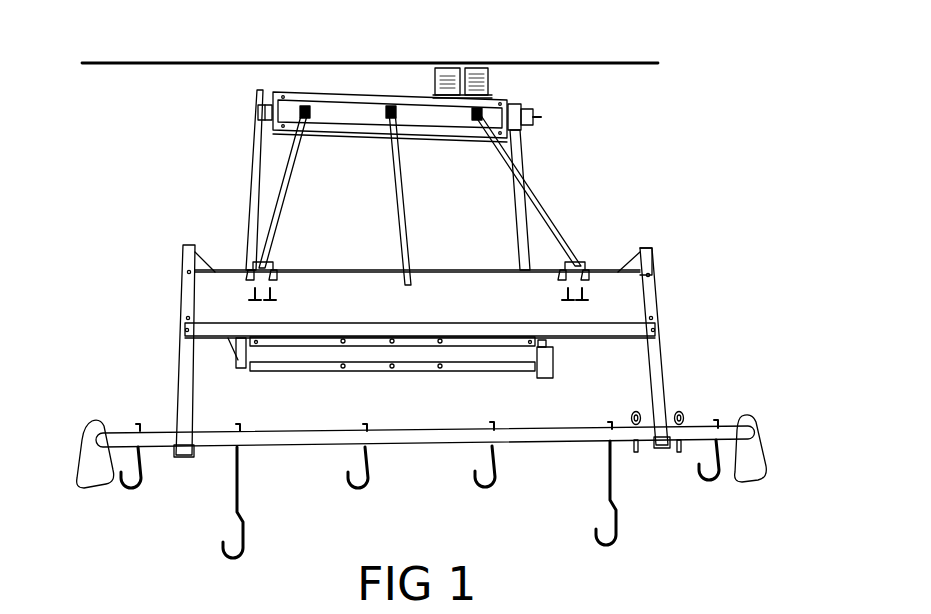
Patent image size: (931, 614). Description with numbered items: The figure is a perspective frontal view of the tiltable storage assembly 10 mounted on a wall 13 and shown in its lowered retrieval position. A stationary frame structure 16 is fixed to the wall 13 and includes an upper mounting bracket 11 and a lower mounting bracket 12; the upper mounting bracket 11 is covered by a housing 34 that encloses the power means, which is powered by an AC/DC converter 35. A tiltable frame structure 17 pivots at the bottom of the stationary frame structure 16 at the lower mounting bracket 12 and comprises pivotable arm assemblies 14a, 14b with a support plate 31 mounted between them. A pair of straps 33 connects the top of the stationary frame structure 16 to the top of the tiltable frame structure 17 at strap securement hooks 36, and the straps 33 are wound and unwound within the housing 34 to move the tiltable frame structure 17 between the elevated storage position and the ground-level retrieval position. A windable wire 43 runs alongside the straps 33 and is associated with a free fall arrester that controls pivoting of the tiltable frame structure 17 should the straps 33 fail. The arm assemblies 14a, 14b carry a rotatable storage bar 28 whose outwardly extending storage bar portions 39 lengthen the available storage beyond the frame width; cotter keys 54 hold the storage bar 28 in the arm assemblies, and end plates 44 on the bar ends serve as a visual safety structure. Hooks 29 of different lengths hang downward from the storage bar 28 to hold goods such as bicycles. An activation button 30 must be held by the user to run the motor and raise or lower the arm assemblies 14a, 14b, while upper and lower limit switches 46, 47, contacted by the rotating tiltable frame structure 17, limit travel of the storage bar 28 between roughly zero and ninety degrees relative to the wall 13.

The tiltable storage assembly 10 is at (468, 264).
The upper mounting bracket 11 is at (256, 108).
The lower mounting bracket 12 is at (286, 355).
The wall 13 is at (199, 191).
The pivotable arm assembly 14a is at (180, 272).
The pivotable arm assembly 14b is at (657, 254).
The stationary frame structure 16 is at (240, 239).
The tiltable frame structure 17 is at (672, 352).
The rotatable storage bar 28 is at (210, 448).
The hooks 29 is at (630, 482).
The activation button 30 is at (553, 363).
The support plate 31 is at (625, 308).
The straps 33 is at (287, 160).
The housing 34 is at (306, 110).
The converter 35 is at (482, 73).
The strap securement hooks 36 is at (582, 262).
The storage bar portions 39 is at (125, 437).
The windable wire 43 is at (402, 177).
The end plates 44 is at (90, 462).
The upper limit switch 46 is at (541, 109).
The lower limit switch 47 is at (560, 343).
The cotter keys 54 is at (687, 410).